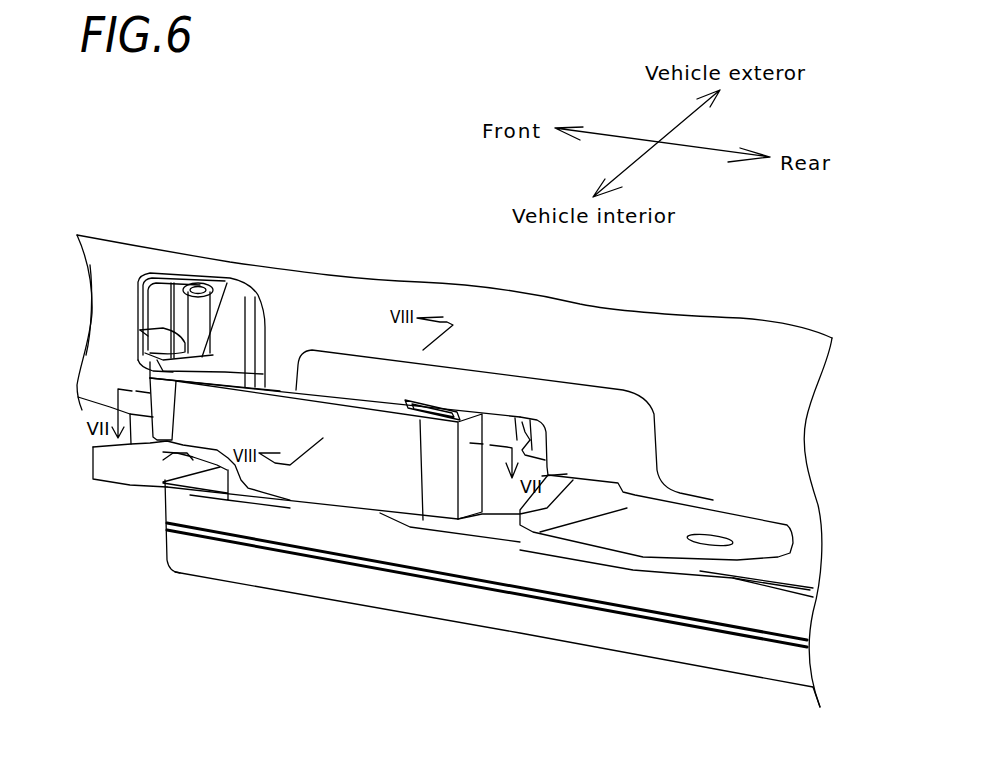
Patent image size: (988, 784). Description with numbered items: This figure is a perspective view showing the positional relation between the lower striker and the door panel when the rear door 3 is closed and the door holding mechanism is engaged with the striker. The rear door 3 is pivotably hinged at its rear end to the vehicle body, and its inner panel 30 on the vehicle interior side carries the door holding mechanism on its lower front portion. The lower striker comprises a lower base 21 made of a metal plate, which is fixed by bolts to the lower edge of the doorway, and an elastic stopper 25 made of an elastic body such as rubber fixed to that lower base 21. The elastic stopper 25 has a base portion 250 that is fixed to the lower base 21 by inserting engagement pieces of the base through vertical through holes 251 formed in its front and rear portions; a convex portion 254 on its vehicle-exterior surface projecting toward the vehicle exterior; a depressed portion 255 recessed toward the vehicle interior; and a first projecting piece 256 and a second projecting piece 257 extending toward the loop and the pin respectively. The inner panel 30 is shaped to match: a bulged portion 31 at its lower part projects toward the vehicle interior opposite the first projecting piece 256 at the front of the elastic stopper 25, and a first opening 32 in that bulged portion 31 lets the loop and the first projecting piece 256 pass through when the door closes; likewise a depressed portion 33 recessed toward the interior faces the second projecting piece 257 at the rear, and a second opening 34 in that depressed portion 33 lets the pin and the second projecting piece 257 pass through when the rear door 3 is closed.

The rear door 3 is at (740, 675).
The lower base 21 is at (640, 570).
The elastic stopper 25 is at (337, 511).
The base portion 250 is at (370, 507).
The through hole 251 is at (157, 442).
The convex portion 254 is at (336, 365).
The depressed portion 255 is at (280, 387).
The first projecting piece 256 is at (140, 330).
The second projecting piece 257 is at (522, 422).
The inner panel 30 is at (737, 370).
The bulged portion 31 is at (123, 293).
The first opening 32 is at (200, 281).
The depressed portion 33 is at (612, 430).
The second opening 34 is at (522, 427).